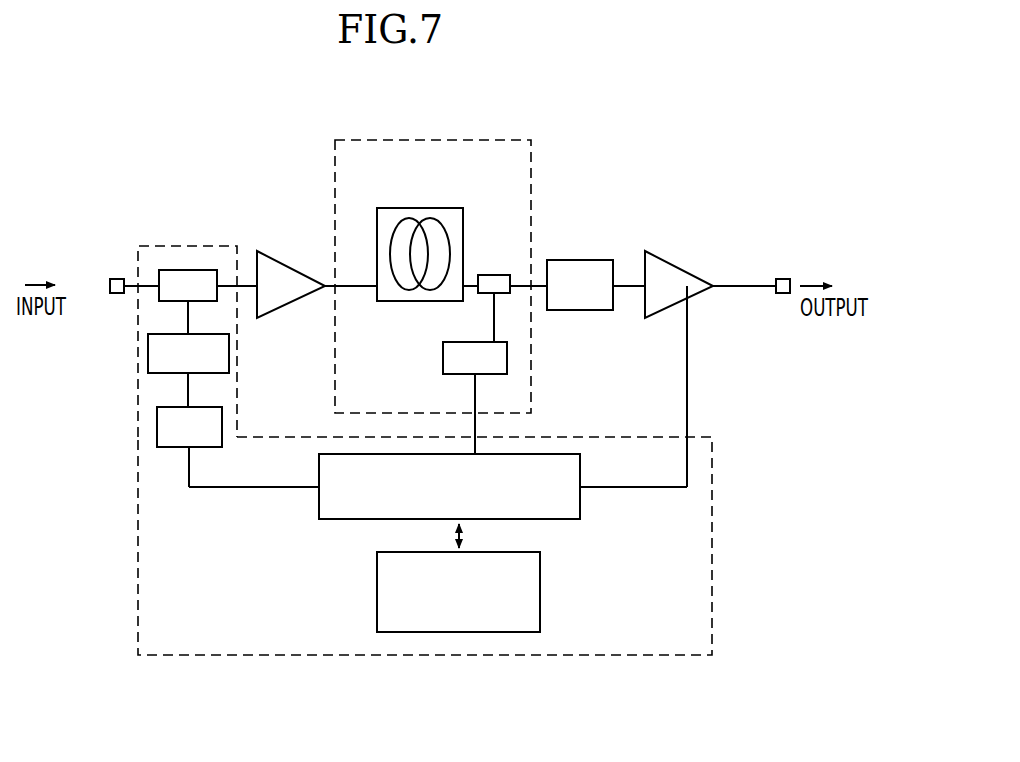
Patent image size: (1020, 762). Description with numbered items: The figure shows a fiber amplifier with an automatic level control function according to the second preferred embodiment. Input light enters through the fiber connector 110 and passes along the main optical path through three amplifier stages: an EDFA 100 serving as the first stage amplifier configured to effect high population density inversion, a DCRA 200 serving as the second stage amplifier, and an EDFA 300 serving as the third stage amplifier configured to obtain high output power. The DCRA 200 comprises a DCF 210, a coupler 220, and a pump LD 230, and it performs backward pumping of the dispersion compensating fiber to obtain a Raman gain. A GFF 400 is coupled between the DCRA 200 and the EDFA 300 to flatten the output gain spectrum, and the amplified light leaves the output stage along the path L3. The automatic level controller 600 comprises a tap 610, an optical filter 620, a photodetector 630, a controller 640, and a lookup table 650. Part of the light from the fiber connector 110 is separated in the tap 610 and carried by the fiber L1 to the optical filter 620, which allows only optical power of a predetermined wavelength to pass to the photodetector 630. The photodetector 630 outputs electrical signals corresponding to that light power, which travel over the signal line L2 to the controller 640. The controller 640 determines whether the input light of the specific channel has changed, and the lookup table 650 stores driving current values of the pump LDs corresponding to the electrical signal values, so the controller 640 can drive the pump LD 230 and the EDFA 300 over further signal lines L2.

The fiber connector 110 is at (107, 275).
The tap 610 is at (185, 266).
The EDFA 100 is at (290, 262).
The DCRA 200 is at (500, 134).
The DCF 210 is at (418, 212).
The coupler 220 is at (494, 274).
The pump LD 230 is at (441, 361).
The GFF 400 is at (578, 260).
The EDFA 300 is at (680, 257).
The optical filter 620 is at (146, 358).
The photodetector 630 is at (155, 428).
The controller 640 is at (584, 508).
The lookup table 650 is at (544, 590).
The automatic level controller 600 is at (393, 660).
The fiber L1 is at (184, 323).
The signal line L2 is at (212, 491).
The output optical path L3 is at (748, 294).